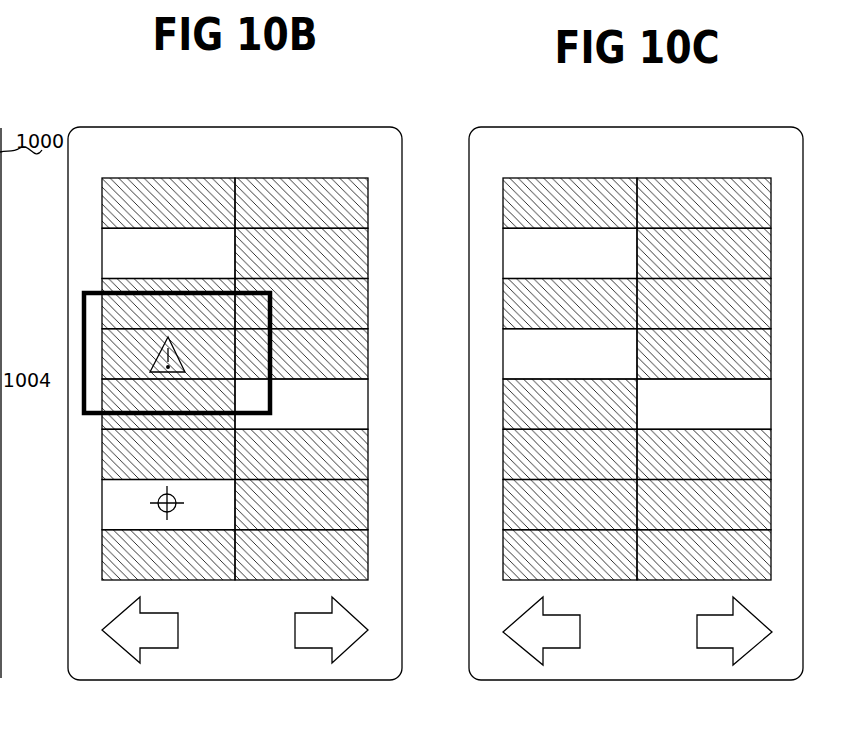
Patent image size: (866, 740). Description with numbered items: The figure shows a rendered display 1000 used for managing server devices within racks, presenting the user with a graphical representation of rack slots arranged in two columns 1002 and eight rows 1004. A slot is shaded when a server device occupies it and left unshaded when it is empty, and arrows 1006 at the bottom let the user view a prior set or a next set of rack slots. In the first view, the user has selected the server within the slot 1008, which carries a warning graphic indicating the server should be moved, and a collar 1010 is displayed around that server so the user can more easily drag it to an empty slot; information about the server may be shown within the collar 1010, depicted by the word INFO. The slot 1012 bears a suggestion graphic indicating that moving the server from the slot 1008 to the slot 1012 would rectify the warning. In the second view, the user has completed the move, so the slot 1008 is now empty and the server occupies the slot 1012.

In FIG. 10B, the rendered display 1000 is at (403, 154).
In FIG. 10C, the rendered display 1000 is at (805, 152).
In FIG. 10B, the columns 1002 is at (102, 178).
In FIG. 10C, the columns 1002 is at (503, 178).
In FIG. 10B, the rows 1004 is at (235, 379).
In FIG. 10C, the rows 1004 is at (638, 379).
In FIG. 10B, the arrows 1006 is at (295, 640).
In FIG. 10C, the arrows 1006 is at (697, 643).
In FIG. 10B, the slot 1008 is at (100, 347).
In FIG. 10C, the slot 1008 is at (503, 348).
In FIG. 10B, the collar 1010 is at (84, 298).
In FIG. 10B, the slot 1012 is at (117, 502).
In FIG. 10C, the slot 1012 is at (523, 505).